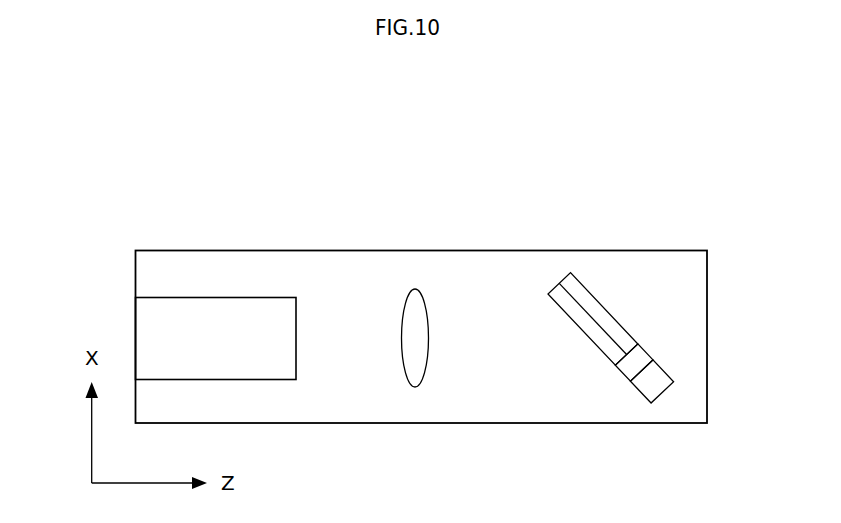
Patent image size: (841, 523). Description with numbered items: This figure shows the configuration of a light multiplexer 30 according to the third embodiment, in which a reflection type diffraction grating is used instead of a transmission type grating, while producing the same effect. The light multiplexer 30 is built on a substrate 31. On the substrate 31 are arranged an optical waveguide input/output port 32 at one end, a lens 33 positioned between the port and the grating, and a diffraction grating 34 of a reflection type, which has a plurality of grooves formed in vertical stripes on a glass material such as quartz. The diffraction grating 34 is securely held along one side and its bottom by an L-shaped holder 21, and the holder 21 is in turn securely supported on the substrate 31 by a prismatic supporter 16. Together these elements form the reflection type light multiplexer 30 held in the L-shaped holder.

The light multiplexer 30 is at (500, 127).
The substrate 31 is at (600, 423).
The optical waveguide input/output port 32 is at (210, 297).
The lens 33 is at (415, 289).
The diffraction grating 34 is at (562, 283).
The L-shaped holder 21 is at (646, 353).
The prismatic supporter 16 is at (673, 378).